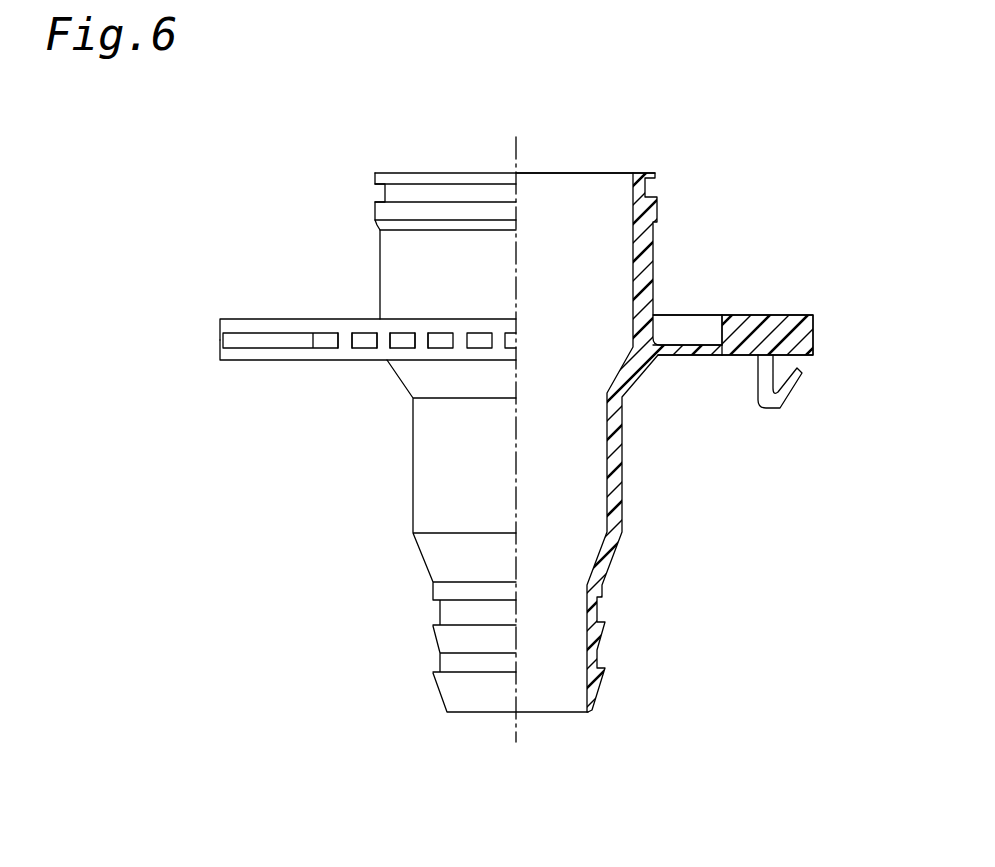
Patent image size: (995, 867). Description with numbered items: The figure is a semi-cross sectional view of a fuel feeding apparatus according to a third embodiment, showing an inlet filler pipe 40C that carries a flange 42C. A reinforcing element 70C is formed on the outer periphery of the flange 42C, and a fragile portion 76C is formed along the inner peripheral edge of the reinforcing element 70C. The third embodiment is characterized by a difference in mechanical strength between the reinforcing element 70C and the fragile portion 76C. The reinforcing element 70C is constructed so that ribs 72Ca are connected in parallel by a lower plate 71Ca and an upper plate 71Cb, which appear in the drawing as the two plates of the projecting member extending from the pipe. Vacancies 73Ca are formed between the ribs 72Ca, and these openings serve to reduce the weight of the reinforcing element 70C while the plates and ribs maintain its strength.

The inlet filler pipe 40C is at (537, 439).
The reinforcing element 70C is at (737, 317).
The flange 42C is at (790, 320).
The fragile portion 76C is at (700, 357).
The upper plate 71Cb is at (237, 321).
The lower plate 71Ca is at (233, 358).
The ribs 72Ca is at (382, 348).
The vacancies 73Ca is at (397, 330).